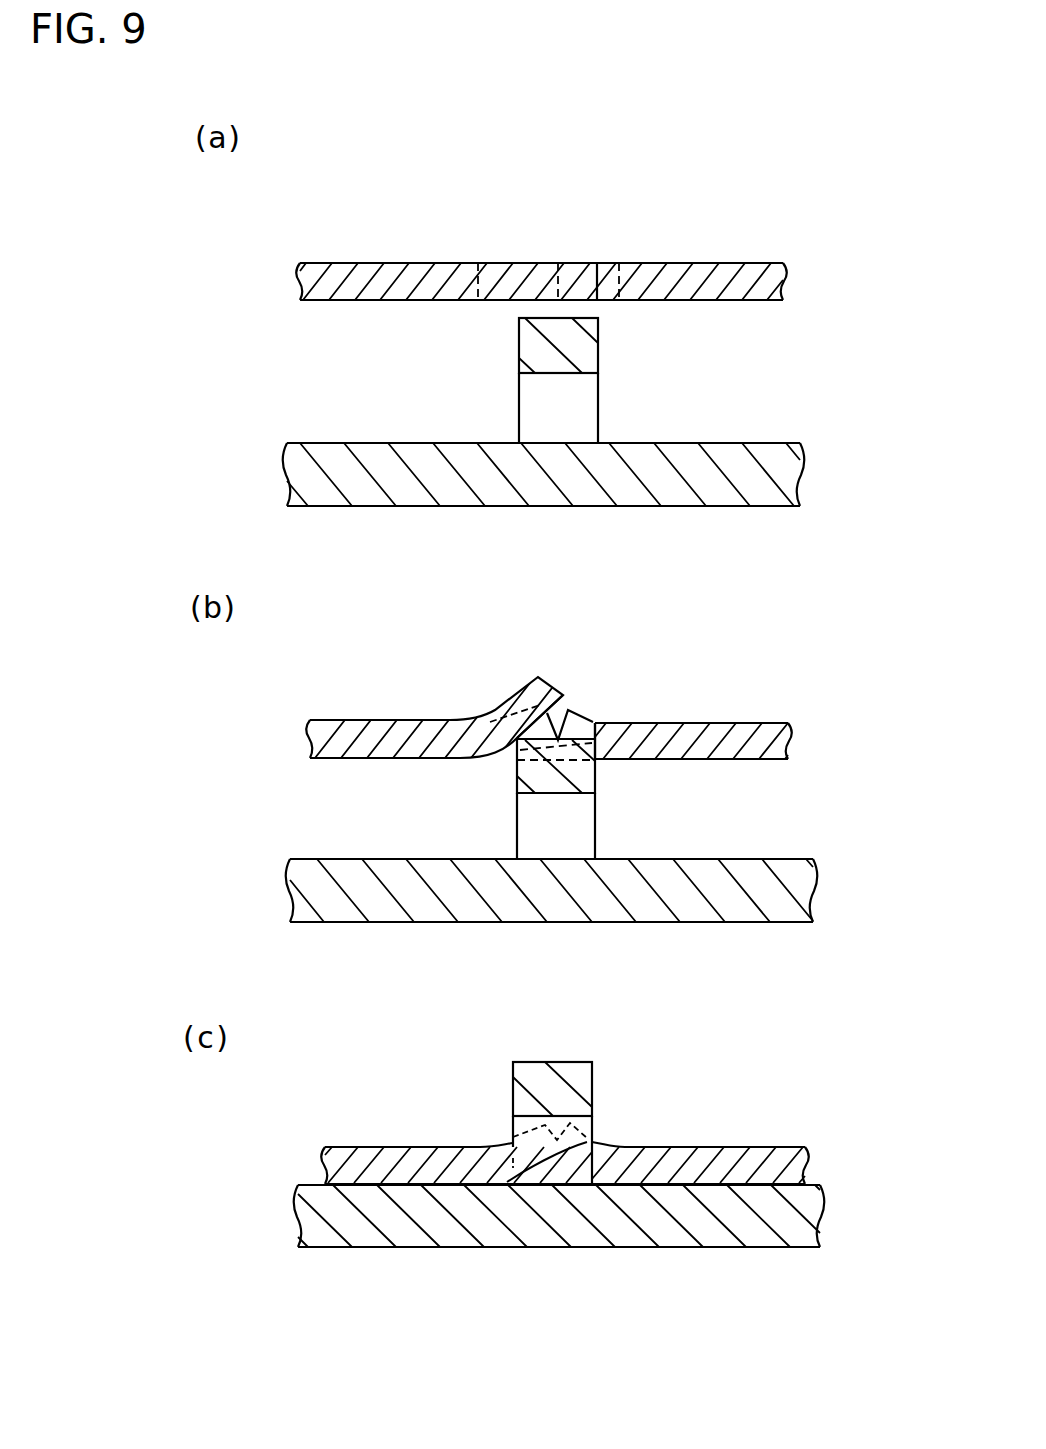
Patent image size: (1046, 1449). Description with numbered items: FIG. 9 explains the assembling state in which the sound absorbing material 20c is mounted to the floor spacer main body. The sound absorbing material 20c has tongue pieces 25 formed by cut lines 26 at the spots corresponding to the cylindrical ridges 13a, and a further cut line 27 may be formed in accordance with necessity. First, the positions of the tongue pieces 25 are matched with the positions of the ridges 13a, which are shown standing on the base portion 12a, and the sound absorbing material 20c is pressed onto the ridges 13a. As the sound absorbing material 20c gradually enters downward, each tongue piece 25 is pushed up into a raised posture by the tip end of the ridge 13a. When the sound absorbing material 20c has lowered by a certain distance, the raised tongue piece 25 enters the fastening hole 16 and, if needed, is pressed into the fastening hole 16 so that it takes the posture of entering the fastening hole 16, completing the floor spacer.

The sound absorbing material 20c is at (337, 270).
The tongue piece 25 is at (573, 263).
The cut line 26 is at (600, 297).
The cut line 27 is at (553, 283).
The ridge 13a is at (590, 350).
The fastening hole 16 is at (535, 417).
The base plate 12a is at (418, 487).